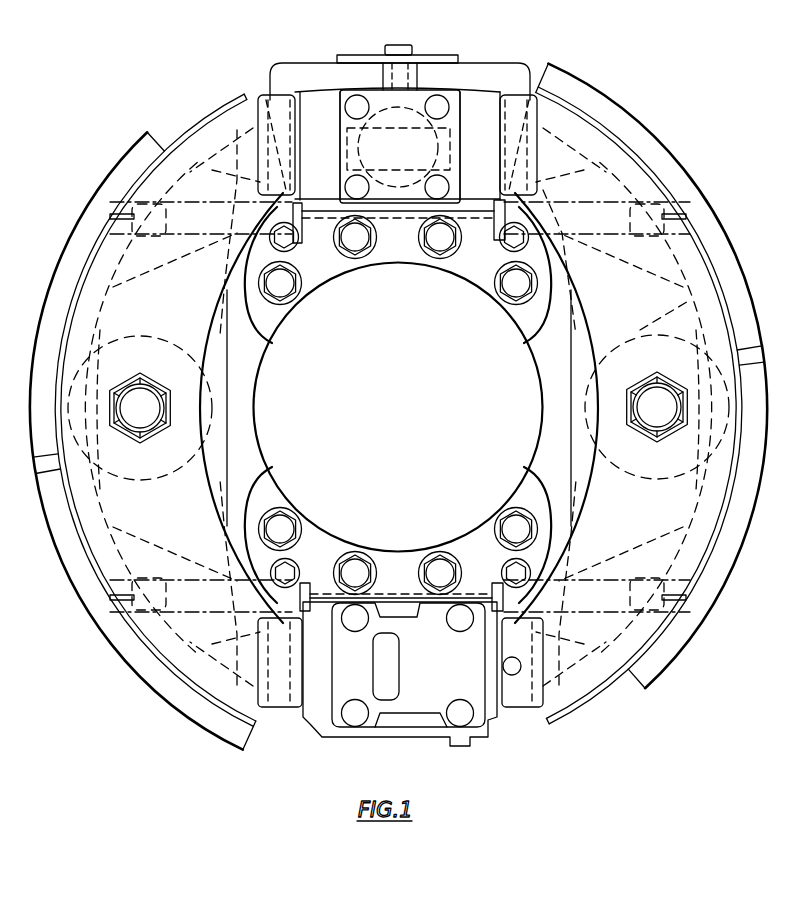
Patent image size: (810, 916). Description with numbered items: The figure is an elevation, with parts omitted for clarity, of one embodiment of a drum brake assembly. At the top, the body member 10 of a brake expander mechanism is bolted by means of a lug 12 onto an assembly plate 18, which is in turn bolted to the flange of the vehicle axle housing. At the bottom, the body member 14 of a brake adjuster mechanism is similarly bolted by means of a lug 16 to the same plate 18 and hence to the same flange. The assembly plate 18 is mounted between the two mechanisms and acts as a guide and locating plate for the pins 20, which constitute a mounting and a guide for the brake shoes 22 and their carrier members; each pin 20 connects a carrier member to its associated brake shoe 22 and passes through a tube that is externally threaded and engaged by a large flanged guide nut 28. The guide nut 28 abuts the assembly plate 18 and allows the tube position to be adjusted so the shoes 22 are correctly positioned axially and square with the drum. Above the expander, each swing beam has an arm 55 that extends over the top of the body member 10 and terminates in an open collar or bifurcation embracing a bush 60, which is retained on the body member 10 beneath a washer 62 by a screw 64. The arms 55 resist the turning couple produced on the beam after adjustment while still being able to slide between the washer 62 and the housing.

The body member of brake expander mechanism 10 is at (267, 100).
The lug 12 is at (281, 336).
The body member of brake adjuster mechanism 14 is at (491, 725).
The lug 16 is at (270, 493).
The assembly plate 18 is at (596, 537).
The pin 20 is at (140, 402).
The brake shoe 22 is at (165, 663).
The flanged guide nut 28 is at (647, 332).
The arm 55 is at (284, 72).
The bush 60 is at (359, 65).
The washer 62 is at (432, 62).
The screw 64 is at (401, 45).